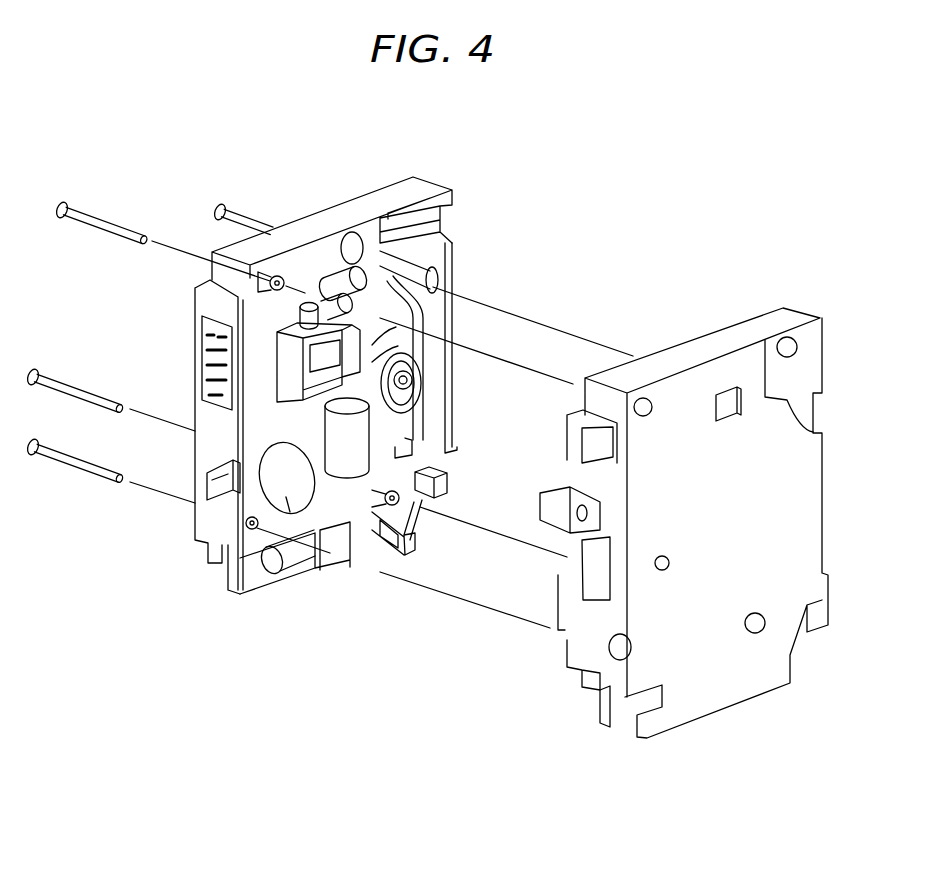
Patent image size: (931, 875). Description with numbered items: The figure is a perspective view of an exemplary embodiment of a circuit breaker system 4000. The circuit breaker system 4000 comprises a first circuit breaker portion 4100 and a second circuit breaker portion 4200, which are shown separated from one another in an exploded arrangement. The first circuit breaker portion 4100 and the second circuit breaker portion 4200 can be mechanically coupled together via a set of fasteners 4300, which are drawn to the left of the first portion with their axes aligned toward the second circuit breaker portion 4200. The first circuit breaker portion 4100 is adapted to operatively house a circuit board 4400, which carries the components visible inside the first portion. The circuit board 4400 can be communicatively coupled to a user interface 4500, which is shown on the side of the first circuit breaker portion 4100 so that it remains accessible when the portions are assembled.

The circuit breaker system 4000 is at (175, 178).
The first circuit breaker portion 4100 is at (392, 195).
The second circuit breaker portion 4200 is at (581, 680).
The set of fasteners 4300 is at (84, 385).
The circuit board 4400 is at (257, 420).
The user interface 4500 is at (199, 327).